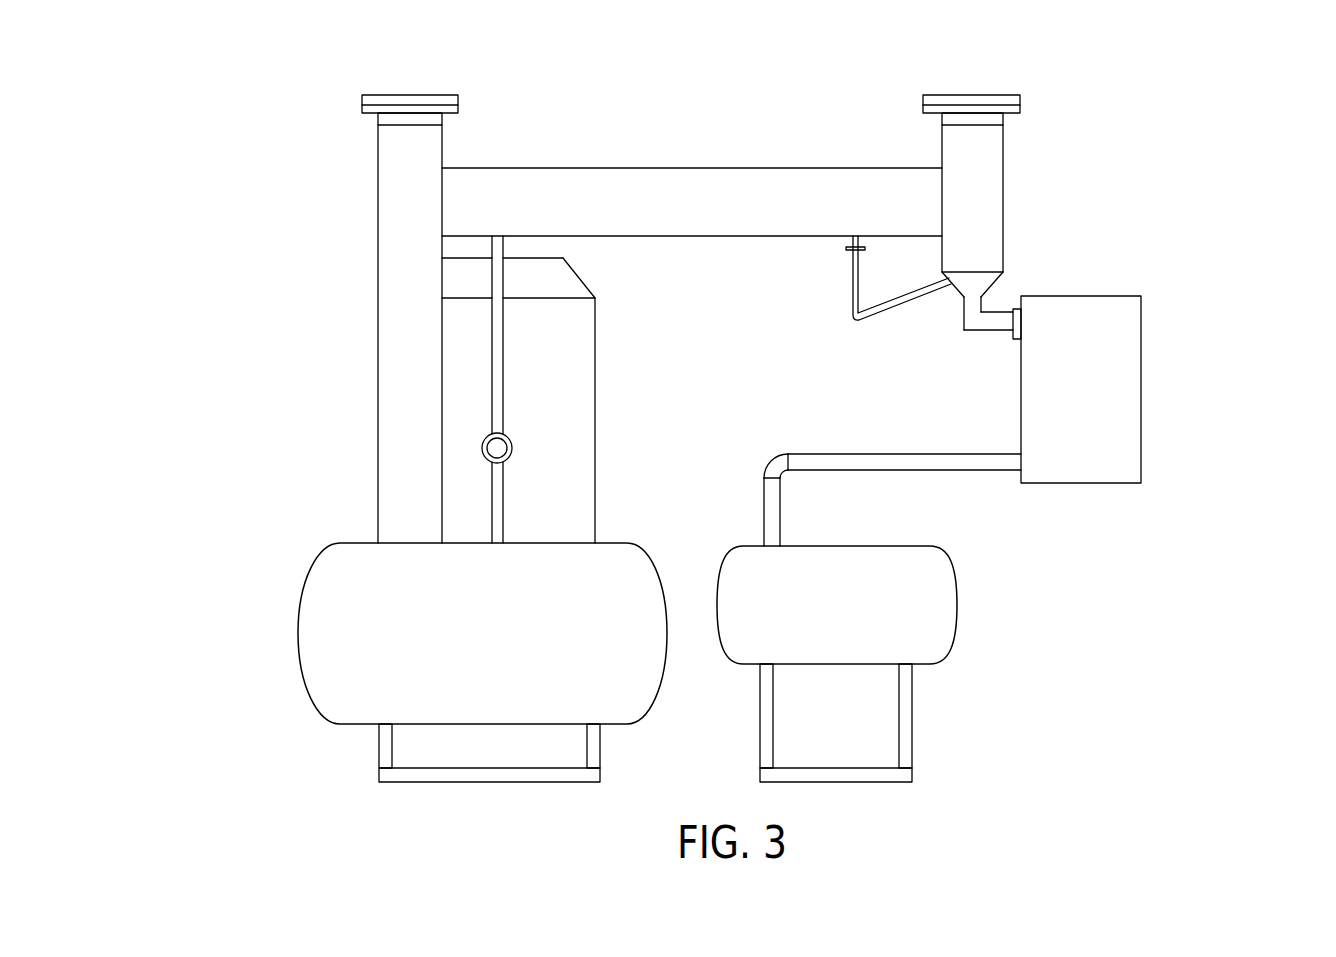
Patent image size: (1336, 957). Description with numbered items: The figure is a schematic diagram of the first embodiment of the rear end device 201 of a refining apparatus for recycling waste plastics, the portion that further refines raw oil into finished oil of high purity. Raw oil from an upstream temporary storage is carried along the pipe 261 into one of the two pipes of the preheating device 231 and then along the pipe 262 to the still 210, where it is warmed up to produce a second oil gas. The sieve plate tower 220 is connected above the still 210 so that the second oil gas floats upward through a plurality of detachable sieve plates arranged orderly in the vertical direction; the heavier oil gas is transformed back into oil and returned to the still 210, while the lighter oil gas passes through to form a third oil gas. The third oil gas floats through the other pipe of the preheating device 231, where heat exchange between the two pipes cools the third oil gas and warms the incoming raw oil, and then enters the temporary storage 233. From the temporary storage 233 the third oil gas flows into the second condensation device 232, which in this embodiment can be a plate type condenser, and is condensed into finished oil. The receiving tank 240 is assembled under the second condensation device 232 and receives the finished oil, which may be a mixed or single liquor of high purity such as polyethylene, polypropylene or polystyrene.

The rear end device 201 is at (1237, 215).
The still 210 is at (325, 628).
The sieve plate tower 220 is at (393, 263).
The preheating device 231 is at (647, 182).
The second condensation device 232 is at (1130, 393).
The temporary storage 233 is at (992, 180).
The receiving tank 240 is at (940, 628).
The pipe 261 is at (855, 270).
The pipe 262 is at (497, 367).